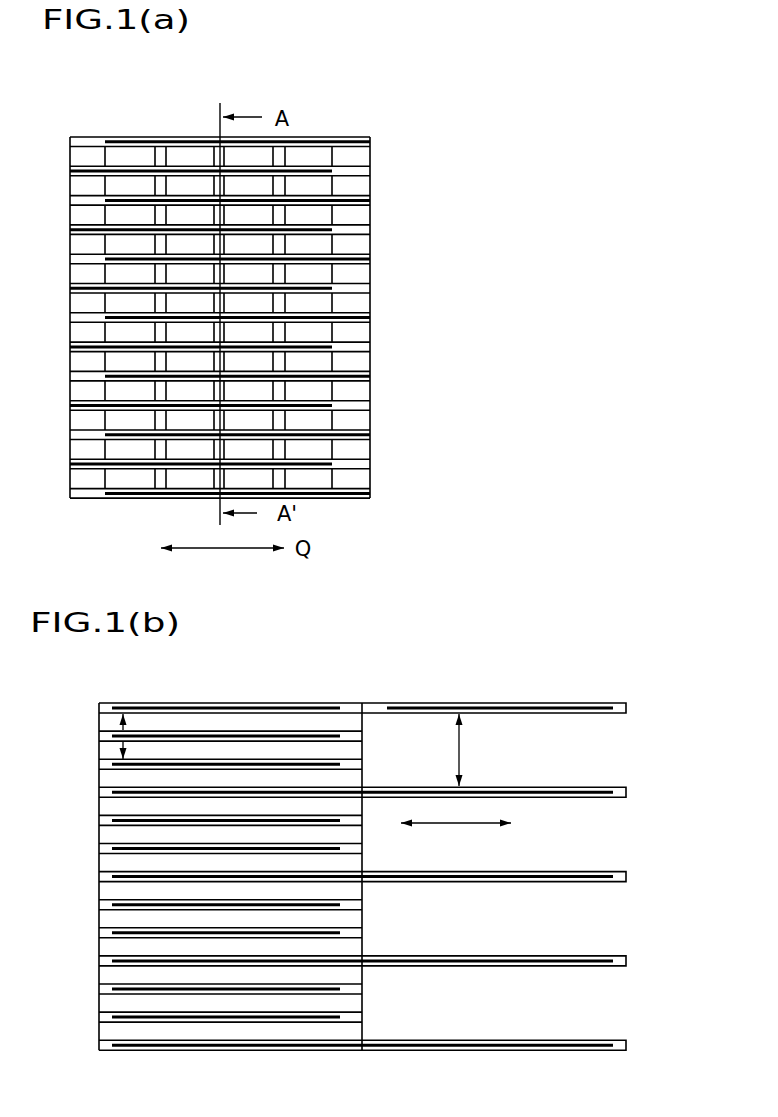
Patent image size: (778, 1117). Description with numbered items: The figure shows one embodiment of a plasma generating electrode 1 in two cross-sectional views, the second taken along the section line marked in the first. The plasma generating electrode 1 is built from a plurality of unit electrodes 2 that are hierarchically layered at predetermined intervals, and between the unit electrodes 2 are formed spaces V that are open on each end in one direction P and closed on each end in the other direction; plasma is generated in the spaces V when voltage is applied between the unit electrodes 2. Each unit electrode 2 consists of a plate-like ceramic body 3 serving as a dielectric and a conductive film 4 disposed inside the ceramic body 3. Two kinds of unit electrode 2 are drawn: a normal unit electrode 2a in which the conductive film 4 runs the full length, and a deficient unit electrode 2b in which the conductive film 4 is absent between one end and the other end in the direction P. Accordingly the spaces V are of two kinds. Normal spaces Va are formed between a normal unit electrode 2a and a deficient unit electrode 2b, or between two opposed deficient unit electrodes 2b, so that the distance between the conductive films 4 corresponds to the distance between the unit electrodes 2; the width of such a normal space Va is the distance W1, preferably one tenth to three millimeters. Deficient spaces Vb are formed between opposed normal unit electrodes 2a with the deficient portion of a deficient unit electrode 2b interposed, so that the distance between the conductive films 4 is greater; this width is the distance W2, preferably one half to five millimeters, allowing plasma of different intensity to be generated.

In FIG. 1A, the plasma generating electrode 1 is at (419, 91).
In FIG. 1B, the plasma generating electrode 1 is at (659, 680).
In FIG. 1A, the unit electrode 2 is at (328, 136).
In FIG. 1B, the unit electrode 2 is at (365, 880).
In FIG. 1B, the normal unit electrode 2a is at (497, 787).
In FIG. 1B, the deficient unit electrode 2b is at (158, 763).
In FIG. 1A, the ceramic body 3 is at (132, 137).
In FIG. 1B, the ceramic body 3 is at (600, 703).
In FIG. 1A, the conductive film 4 is at (191, 142).
In FIG. 1B, the conductive film 4 is at (247, 708).
In FIG. 1A, the space V is at (300, 153).
In FIG. 1B, the space V is at (296, 723).
In FIG. 1B, the normal space Va is at (186, 722).
In FIG. 1B, the deficient space Vb is at (545, 742).
In FIG. 1B, the distance between deficient unit electrodes W1 is at (117, 752).
In FIG. 1B, the distance between normal unit electrodes W2 is at (433, 750).
In FIG. 1B, the one direction P is at (456, 838).